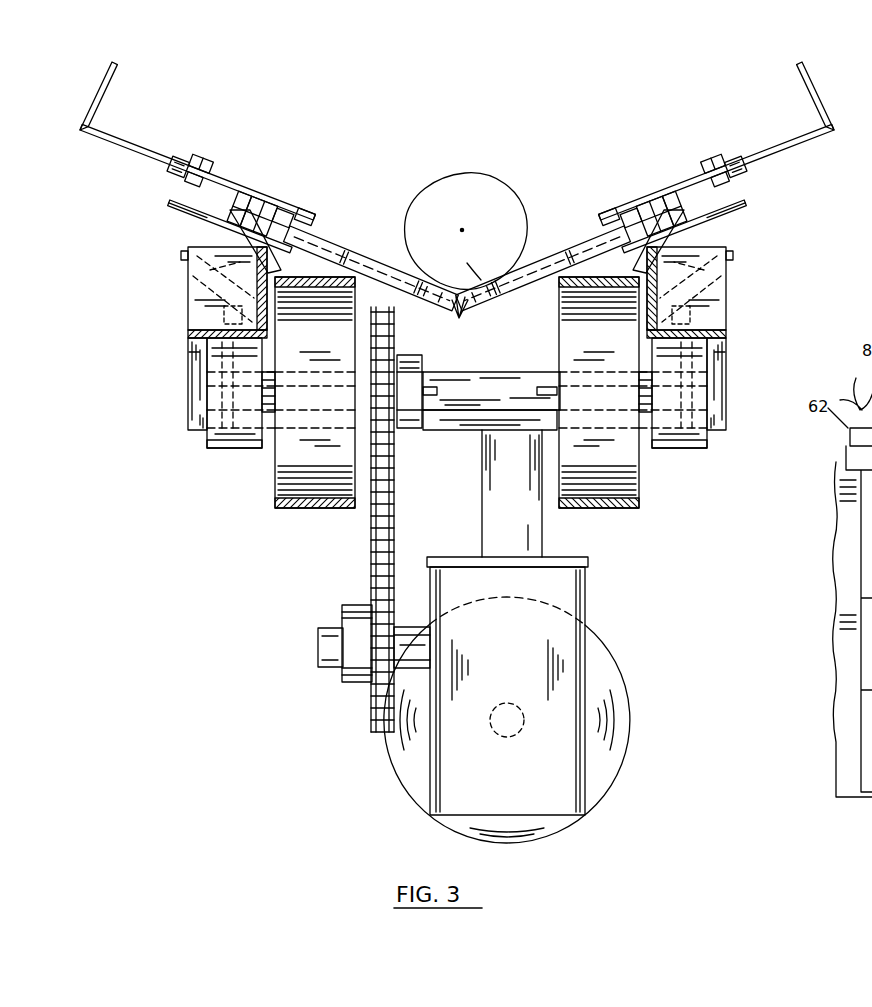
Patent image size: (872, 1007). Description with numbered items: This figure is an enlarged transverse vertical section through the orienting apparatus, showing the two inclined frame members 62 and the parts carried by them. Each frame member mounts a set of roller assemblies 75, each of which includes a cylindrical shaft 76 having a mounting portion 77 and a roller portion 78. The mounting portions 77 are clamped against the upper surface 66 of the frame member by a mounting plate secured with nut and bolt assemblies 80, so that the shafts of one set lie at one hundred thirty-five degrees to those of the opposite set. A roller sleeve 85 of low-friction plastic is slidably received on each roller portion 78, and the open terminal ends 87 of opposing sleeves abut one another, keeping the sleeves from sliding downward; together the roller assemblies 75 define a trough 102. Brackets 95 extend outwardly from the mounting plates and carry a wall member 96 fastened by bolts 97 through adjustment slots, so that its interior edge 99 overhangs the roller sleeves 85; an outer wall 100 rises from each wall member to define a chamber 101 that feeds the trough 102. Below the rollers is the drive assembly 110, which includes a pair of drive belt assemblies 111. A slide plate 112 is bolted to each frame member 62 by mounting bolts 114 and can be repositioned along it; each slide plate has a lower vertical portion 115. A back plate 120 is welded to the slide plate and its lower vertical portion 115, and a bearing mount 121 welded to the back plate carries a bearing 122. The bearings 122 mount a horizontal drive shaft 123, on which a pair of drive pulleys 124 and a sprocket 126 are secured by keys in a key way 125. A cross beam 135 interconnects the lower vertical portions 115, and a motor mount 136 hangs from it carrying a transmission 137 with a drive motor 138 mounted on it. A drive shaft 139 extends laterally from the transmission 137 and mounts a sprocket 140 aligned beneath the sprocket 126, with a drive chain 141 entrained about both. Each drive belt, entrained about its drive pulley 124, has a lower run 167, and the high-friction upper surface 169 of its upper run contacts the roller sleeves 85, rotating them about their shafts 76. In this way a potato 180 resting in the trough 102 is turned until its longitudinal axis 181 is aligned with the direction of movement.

The frame member 62 is at (200, 218).
The upper surface 66 is at (232, 222).
The roller assembly 75 is at (402, 260).
The cylindrical shaft 76 is at (345, 242).
The mounting portion 77 is at (285, 217).
The roller portion 78 is at (425, 276).
The nut and bolt assembly 80 is at (258, 207).
The roller sleeve 85 is at (396, 260).
The open terminal end 87 is at (462, 308).
The bracket 95 is at (172, 173).
The wall member 96 is at (108, 147).
The bolt 97 is at (192, 162).
The interior edge 99 is at (312, 222).
The outer wall 100 is at (99, 74).
The chamber 101 is at (410, 110).
The trough 102 is at (467, 263).
The drive assembly 110 is at (337, 519).
The drive belt assembly 111 is at (477, 412).
The slide plate 112 is at (188, 280).
The mounting bolt 114 is at (192, 333).
The lower vertical portion 115 is at (187, 357).
The back plate 120 is at (210, 290).
The bearing mount 121 is at (190, 337).
The bearing 122 is at (218, 442).
The drive shaft 123 is at (474, 372).
The drive pulley 124 is at (290, 457).
The key way 125 is at (432, 388).
The sprocket 126 is at (410, 426).
The cross beam 135 is at (475, 432).
The motor mount 136 is at (522, 511).
The transmission 137 is at (585, 592).
The drive motor 138 is at (629, 684).
The drive shaft 139 is at (318, 655).
The sprocket 140 is at (362, 675).
The drive chain 141 is at (378, 547).
The lower run 167 is at (313, 510).
The upper surface 169 is at (298, 270).
The potato 180 is at (470, 173).
The longitudinal axis 181 is at (461, 230).